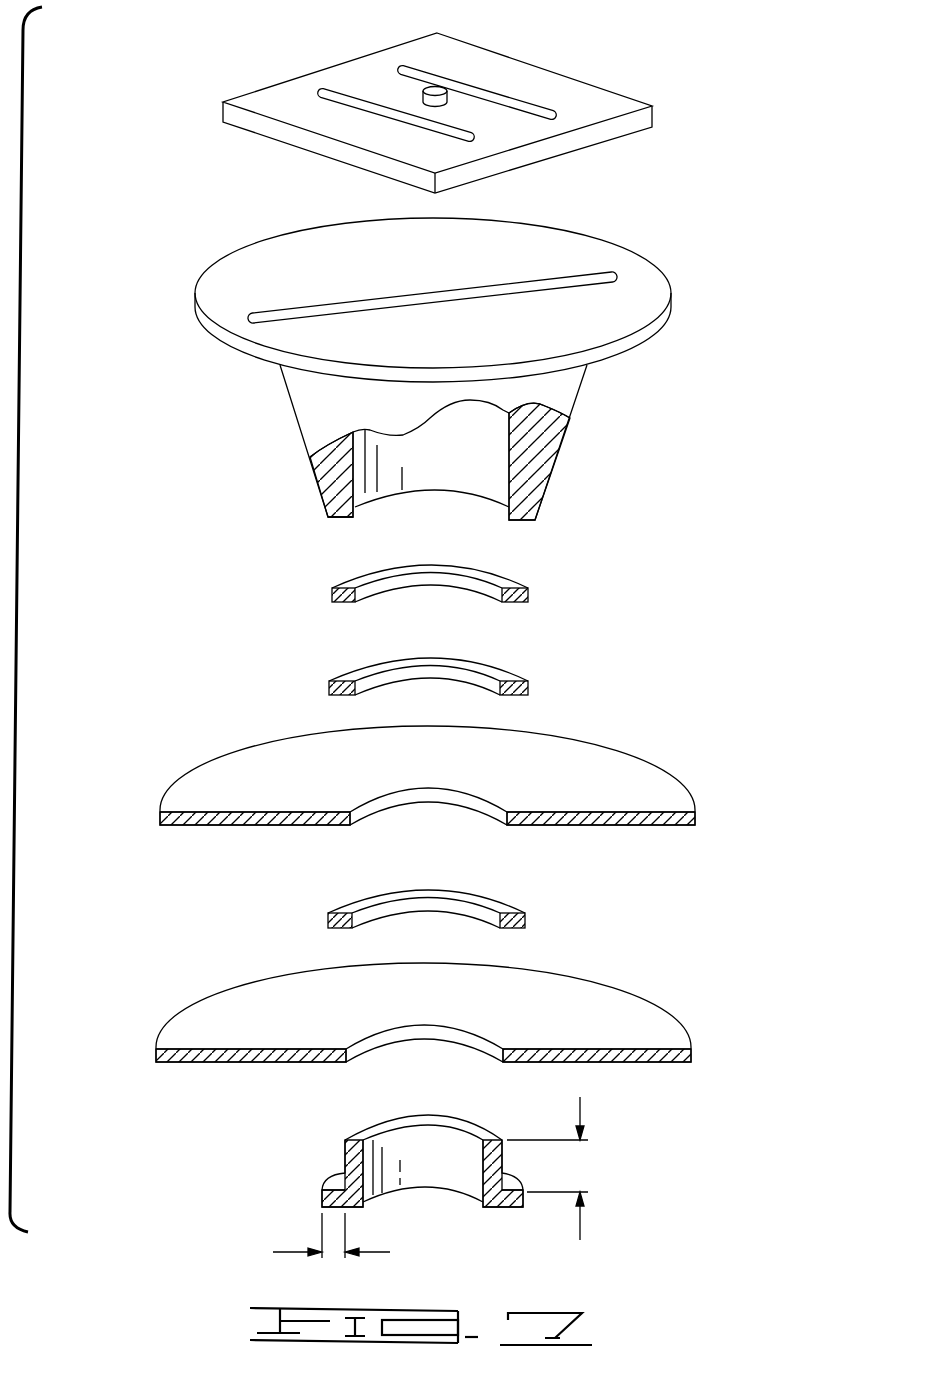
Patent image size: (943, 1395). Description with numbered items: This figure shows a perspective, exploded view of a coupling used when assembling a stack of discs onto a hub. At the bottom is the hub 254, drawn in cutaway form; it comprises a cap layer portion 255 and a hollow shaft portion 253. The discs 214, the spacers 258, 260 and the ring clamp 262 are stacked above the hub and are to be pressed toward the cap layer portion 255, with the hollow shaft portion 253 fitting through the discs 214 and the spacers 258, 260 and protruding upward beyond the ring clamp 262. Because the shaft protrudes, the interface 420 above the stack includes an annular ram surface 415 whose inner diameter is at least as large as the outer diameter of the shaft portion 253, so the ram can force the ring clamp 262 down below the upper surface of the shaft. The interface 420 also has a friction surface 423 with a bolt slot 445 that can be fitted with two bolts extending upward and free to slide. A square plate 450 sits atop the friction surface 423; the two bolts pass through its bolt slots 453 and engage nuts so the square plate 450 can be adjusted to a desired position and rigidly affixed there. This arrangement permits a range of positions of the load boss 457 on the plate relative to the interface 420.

The square plate 450 is at (603, 107).
The bolt slots 453 is at (333, 93).
The load boss 457 is at (428, 88).
The friction surface 423 is at (253, 280).
The bolt slot 445 is at (575, 280).
The interface 420 is at (558, 393).
The annular ram surface 415 is at (338, 518).
The ring clamp 262 is at (513, 583).
The spacer 260 is at (350, 672).
The spacer 258 is at (348, 908).
The discs 214 is at (619, 783).
The hub 254 is at (448, 1175).
The hollow shaft portion 253 is at (558, 1168).
The cap layer portion 255 is at (309, 1238).